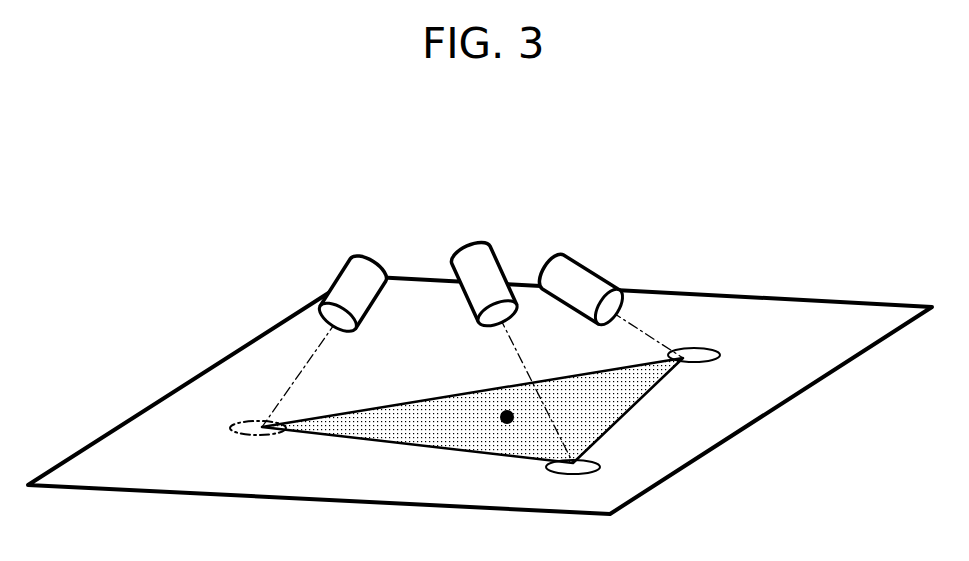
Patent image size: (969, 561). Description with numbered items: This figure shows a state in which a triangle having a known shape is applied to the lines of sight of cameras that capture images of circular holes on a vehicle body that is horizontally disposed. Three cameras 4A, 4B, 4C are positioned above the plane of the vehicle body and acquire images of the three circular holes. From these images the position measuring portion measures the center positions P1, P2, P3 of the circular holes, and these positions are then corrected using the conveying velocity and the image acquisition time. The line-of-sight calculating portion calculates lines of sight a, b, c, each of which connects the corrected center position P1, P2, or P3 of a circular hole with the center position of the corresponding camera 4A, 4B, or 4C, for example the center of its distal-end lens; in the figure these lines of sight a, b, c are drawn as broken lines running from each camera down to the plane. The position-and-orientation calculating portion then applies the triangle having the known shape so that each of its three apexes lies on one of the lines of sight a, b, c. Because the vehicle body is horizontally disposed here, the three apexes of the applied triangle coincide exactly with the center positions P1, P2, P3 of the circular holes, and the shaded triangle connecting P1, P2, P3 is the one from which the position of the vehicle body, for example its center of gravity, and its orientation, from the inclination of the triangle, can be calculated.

The camera 4A is at (357, 268).
The camera 4B is at (470, 255).
The camera 4C is at (575, 277).
The line of sight a is at (312, 352).
The line of sight b is at (510, 350).
The line of sight c is at (638, 320).
The center position P1 is at (244, 421).
The center position P2 is at (592, 469).
The center position P3 is at (697, 338).